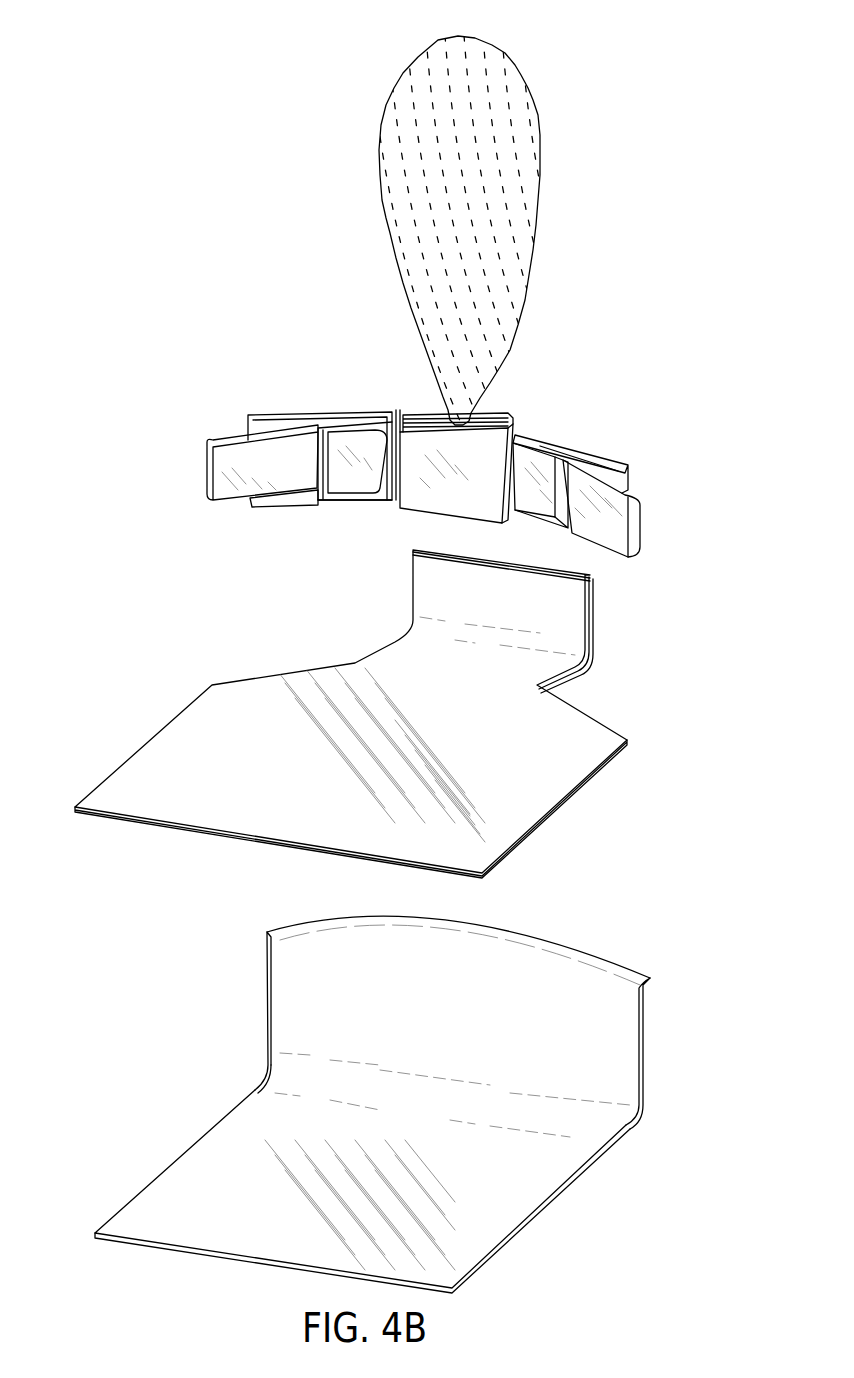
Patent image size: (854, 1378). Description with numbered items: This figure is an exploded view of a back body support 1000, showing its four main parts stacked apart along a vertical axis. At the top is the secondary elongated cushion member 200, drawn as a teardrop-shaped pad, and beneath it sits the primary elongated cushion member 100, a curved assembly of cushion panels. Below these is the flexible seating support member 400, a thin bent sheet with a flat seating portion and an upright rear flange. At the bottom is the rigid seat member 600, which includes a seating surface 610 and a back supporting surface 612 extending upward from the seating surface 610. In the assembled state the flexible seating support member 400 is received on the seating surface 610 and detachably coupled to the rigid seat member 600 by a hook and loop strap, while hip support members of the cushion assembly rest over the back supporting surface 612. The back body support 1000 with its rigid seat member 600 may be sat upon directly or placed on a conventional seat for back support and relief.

The back body support 1000 is at (245, 106).
The secondary elongated cushion member 200 is at (519, 62).
The primary elongated cushion member 100 is at (601, 434).
The flexible seating support member 400 is at (621, 719).
The rigid seat member 600 is at (619, 940).
The back supporting surface 612 is at (622, 1057).
The seating surface 610 is at (505, 1223).